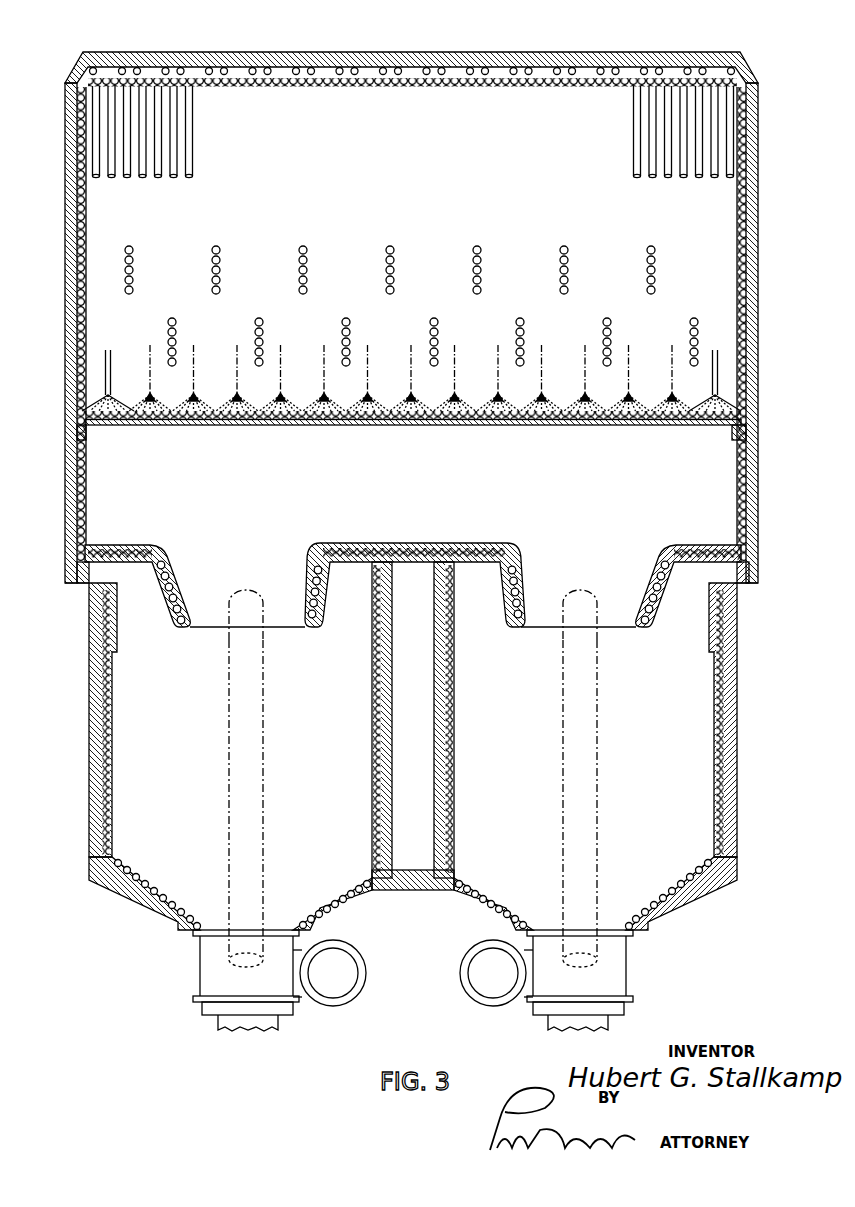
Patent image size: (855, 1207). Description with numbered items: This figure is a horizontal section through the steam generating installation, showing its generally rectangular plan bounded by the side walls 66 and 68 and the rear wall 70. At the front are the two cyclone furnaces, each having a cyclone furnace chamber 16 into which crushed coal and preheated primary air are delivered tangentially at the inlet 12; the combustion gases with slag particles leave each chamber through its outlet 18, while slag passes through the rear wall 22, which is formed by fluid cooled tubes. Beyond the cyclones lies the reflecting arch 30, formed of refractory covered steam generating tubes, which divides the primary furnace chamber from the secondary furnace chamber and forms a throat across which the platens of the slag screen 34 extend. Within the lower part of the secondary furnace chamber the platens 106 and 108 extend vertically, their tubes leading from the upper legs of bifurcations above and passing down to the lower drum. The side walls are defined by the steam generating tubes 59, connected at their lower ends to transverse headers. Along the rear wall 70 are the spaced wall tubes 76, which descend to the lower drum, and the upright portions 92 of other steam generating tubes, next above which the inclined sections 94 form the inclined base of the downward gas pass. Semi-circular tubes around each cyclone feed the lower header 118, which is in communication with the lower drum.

The inlet 12 is at (199, 976).
The cyclone furnace chamber 16 is at (296, 768).
The outlet 18 is at (250, 586).
The rear wall 22 is at (395, 543).
The reflecting arch 30 is at (345, 426).
The slag screen platens 34 is at (370, 368).
The side wall steam generating tubes 59 is at (88, 463).
The side wall 66 is at (65, 228).
The side wall 68 is at (758, 274).
The rear wall 70 is at (434, 60).
The wall tubes 76 is at (223, 67).
The upright tube portions 92 is at (392, 87).
The inclined tube sections 94 is at (182, 136).
The platens 106 is at (342, 325).
The platens 108 is at (300, 252).
The lower header 118 is at (264, 725).